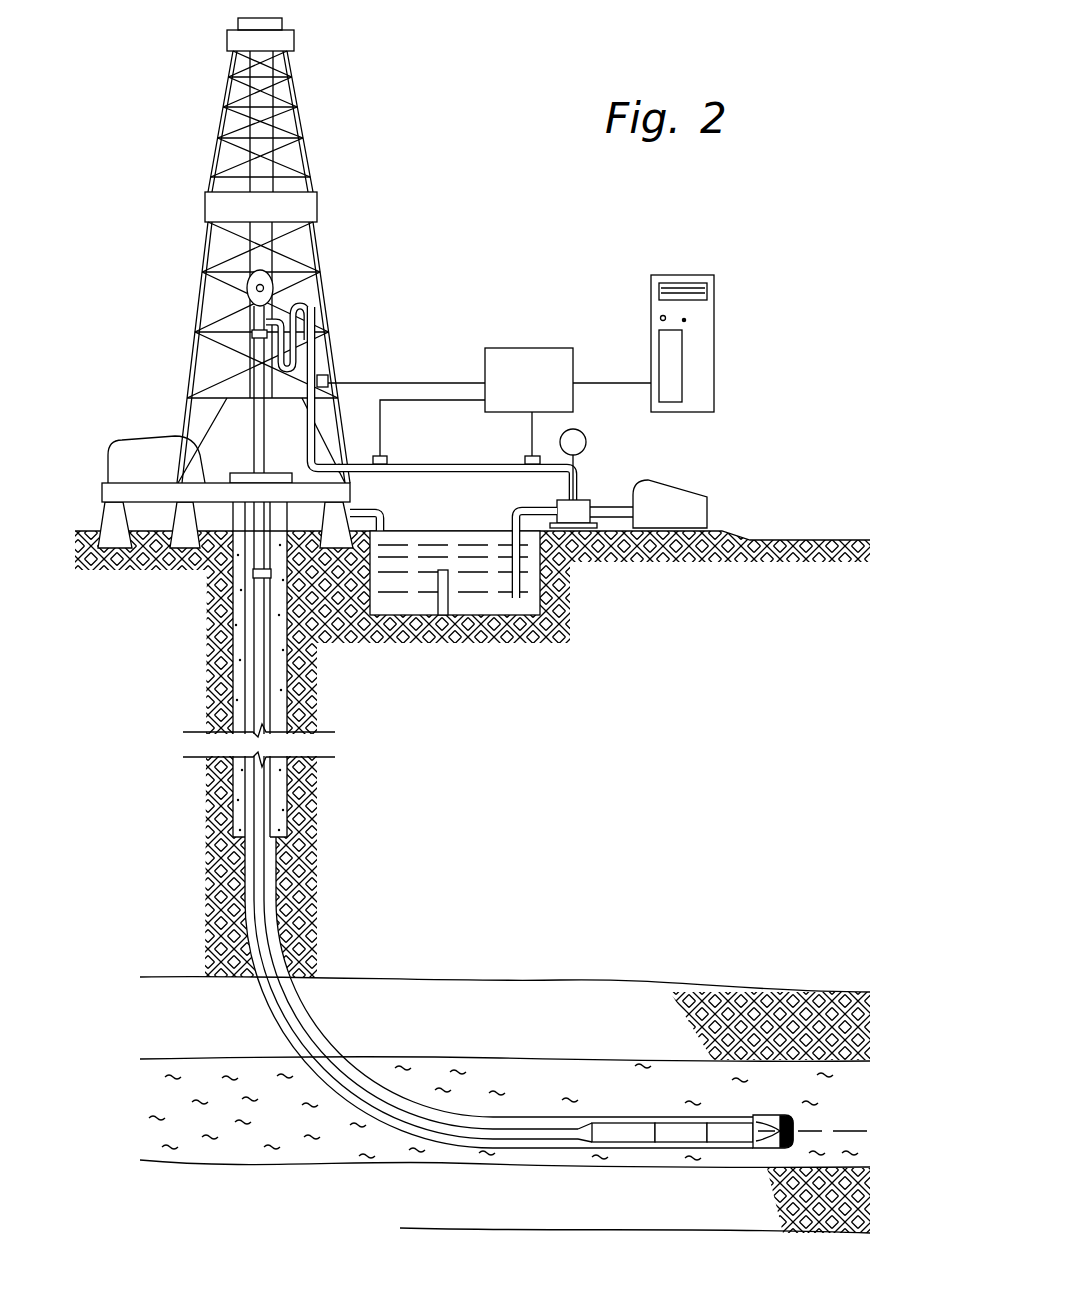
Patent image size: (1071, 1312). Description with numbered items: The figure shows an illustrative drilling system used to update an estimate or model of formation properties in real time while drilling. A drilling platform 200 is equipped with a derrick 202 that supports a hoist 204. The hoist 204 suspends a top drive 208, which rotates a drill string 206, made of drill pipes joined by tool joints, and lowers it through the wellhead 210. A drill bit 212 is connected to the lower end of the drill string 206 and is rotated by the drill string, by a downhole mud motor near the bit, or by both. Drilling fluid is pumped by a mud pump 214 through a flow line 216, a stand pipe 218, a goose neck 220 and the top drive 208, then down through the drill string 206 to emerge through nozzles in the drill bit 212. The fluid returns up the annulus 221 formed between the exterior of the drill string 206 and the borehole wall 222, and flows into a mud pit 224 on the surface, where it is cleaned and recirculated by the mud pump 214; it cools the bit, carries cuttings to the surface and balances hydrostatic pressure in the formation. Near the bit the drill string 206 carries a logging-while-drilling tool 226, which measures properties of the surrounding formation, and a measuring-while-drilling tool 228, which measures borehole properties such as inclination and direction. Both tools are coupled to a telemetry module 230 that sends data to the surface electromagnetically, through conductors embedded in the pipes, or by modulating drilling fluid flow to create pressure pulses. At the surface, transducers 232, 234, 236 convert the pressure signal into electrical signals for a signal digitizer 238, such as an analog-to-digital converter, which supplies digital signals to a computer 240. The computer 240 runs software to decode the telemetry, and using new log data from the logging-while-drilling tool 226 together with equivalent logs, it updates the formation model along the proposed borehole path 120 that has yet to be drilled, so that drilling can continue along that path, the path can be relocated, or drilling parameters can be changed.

The proposed borehole path 120 is at (848, 1132).
The drilling platform 200 is at (352, 491).
The derrick 202 is at (297, 90).
The hoist 204 is at (247, 283).
The drill string 206 is at (548, 1132).
The top drive 208 is at (258, 350).
The wellhead 210 is at (245, 472).
The drill bit 212 is at (772, 1128).
The mud pump 214 is at (677, 485).
The flow line 216 is at (443, 472).
The stand pipe 218 is at (314, 345).
The goose neck 220 is at (318, 301).
The annulus 221 is at (263, 937).
The borehole wall 222 is at (280, 882).
The mud pit 224 is at (425, 550).
The logging-while-drilling tool 226 is at (668, 1132).
The measuring-while-drilling tool 228 is at (720, 1132).
The telemetry module 230 is at (608, 1132).
The transducer 232 is at (326, 378).
The transducer 234 is at (388, 458).
The transducer 236 is at (523, 458).
The signal digitizer 238 is at (530, 348).
The computer 240 is at (714, 340).